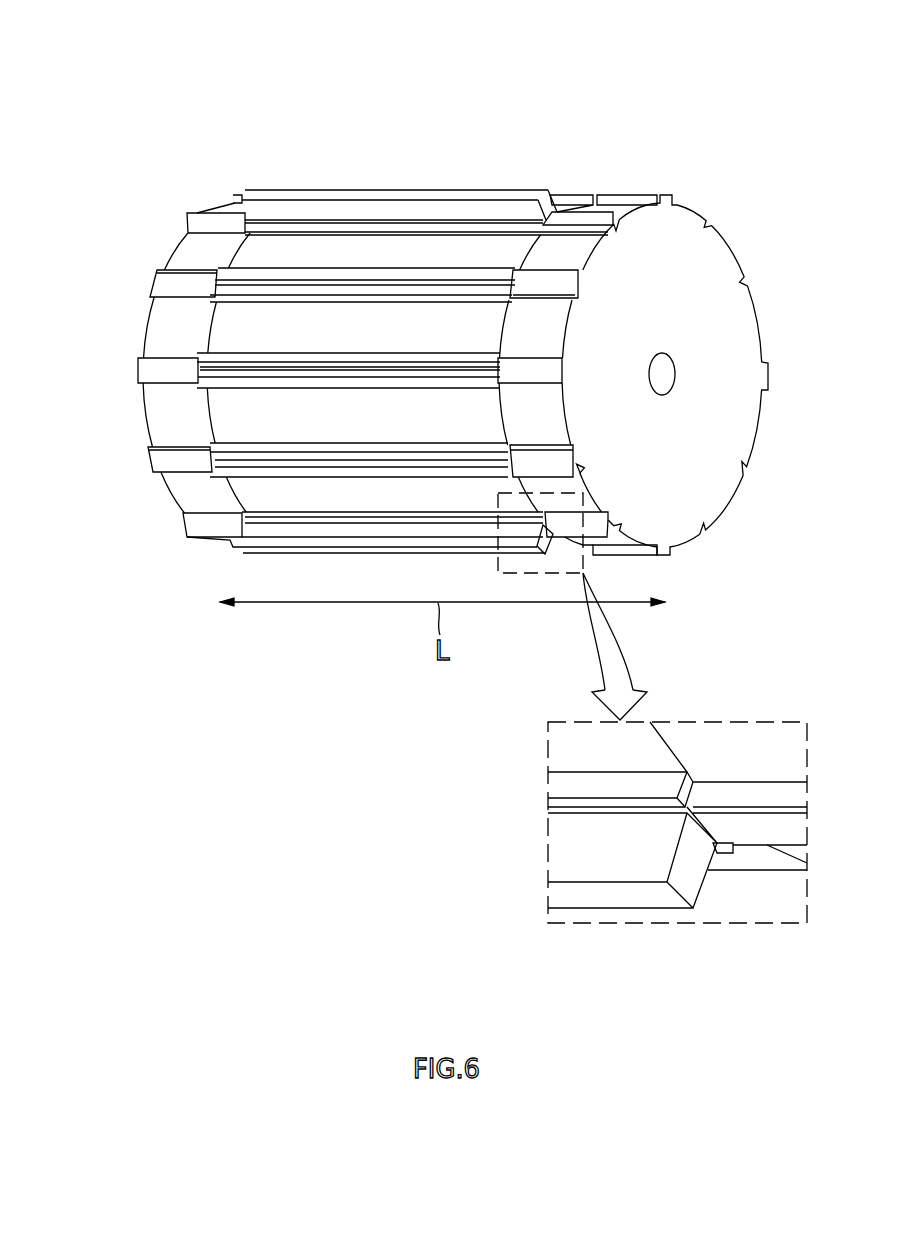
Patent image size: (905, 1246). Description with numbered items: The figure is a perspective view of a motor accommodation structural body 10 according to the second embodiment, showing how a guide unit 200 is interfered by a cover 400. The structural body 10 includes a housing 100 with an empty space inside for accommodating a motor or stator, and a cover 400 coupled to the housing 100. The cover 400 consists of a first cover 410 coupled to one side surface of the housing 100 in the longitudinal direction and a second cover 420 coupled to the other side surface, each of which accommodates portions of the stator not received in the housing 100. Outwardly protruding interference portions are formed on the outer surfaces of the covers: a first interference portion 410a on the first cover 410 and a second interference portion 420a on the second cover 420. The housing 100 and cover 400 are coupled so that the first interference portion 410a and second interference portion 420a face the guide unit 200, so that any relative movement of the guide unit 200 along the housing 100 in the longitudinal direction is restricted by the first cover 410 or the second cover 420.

The structural body 10 is at (244, 113).
The housing 100 is at (497, 149).
The guide unit 200 is at (382, 188).
The cover 400 is at (770, 22).
The first cover 410 is at (758, 238).
The second cover 420 is at (107, 495).
The first interference portion 410a is at (563, 285).
The second interference portion 420a is at (148, 372).